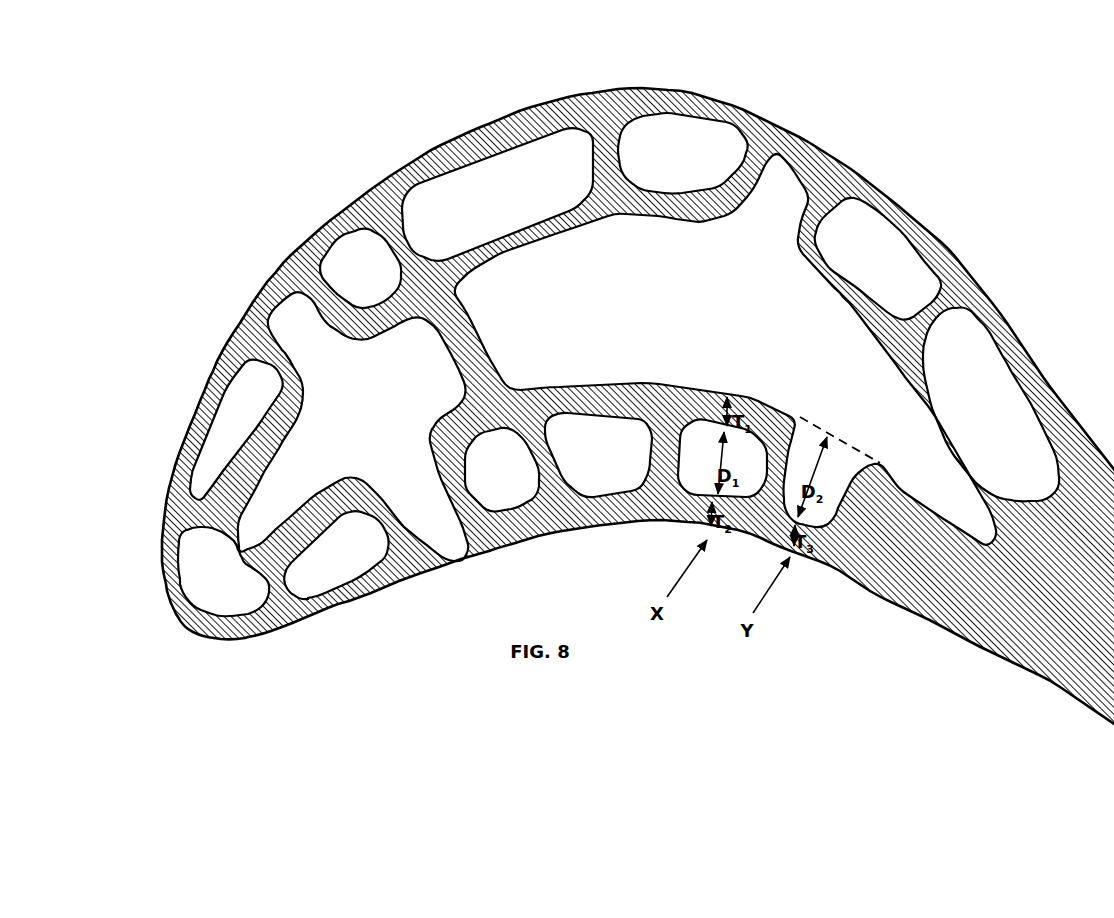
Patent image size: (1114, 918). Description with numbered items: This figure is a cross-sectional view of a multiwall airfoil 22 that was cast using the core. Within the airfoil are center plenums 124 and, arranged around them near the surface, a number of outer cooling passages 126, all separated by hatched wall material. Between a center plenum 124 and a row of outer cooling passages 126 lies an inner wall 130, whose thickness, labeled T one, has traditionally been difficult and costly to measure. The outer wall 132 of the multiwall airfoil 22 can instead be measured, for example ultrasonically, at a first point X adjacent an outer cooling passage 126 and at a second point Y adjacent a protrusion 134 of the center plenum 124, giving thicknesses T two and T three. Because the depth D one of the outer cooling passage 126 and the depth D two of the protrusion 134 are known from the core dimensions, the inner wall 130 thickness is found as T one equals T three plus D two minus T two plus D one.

The multiwall airfoil 22 is at (907, 117).
The center plenum 124 is at (617, 357).
The outer cooling passage 126 is at (697, 457).
The inner wall 130 is at (707, 413).
The outer wall 132 is at (680, 513).
The protrusion 134 is at (843, 462).